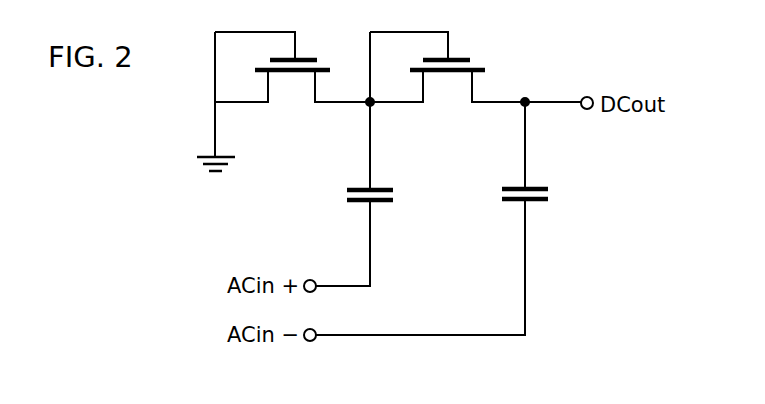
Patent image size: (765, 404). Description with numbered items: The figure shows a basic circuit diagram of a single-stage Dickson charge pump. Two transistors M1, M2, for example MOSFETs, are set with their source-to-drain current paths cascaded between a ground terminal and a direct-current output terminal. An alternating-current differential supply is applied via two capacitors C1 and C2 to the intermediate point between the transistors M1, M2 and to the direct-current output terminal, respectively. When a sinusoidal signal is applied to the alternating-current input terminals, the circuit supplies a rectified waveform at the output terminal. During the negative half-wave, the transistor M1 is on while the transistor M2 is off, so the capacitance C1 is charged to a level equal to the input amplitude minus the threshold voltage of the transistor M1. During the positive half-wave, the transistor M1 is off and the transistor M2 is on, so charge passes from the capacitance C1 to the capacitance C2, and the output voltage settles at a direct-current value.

The transistor M1 is at (280, 73).
The transistor M2 is at (445, 75).
The capacitor C1 is at (358, 204).
The capacitor C2 is at (538, 203).